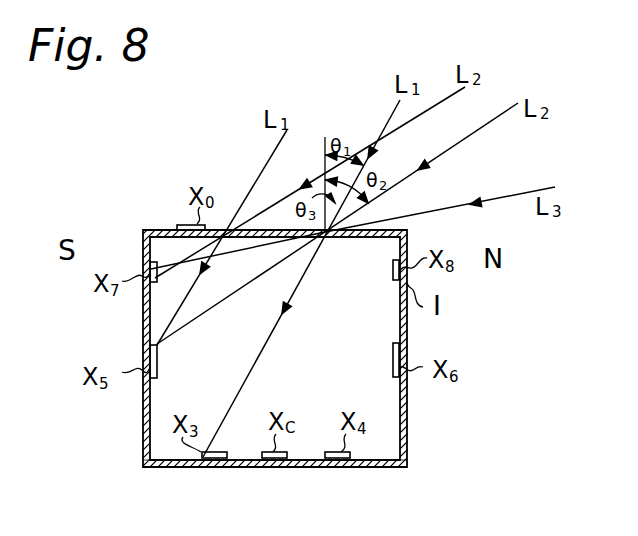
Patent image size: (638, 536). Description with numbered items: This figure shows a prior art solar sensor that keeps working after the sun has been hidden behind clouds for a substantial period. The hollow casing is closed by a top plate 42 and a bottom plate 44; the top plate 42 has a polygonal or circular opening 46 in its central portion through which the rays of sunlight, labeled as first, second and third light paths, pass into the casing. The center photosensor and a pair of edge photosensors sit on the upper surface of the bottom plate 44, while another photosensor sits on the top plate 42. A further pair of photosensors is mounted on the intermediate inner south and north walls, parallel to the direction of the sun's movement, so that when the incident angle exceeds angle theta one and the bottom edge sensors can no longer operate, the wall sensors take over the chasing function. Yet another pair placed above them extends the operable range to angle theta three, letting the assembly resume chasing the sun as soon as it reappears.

The top plate 42 is at (158, 230).
The bottom plate 44 is at (315, 468).
The opening 46 is at (277, 228).